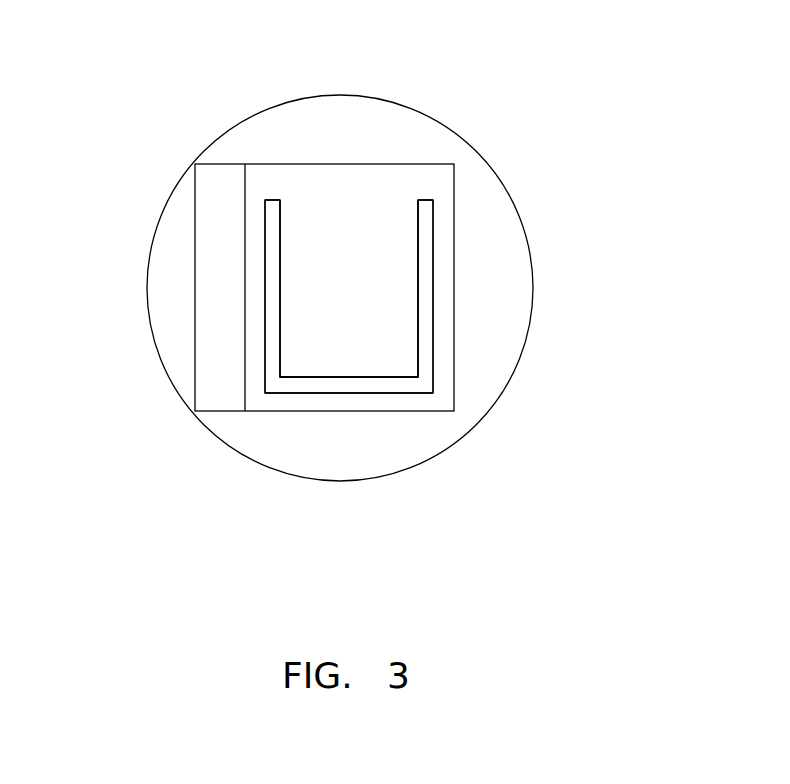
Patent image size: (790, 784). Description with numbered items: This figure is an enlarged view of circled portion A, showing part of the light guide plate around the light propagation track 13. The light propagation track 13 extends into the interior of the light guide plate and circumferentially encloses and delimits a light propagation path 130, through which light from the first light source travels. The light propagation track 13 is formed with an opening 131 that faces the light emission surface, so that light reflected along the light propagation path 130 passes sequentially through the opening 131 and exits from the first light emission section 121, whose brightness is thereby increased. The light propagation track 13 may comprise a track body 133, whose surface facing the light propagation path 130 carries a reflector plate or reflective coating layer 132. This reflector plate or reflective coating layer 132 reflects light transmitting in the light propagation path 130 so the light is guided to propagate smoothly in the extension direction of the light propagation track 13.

The circled portion A is at (317, 95).
The first light emission section 121 is at (287, 163).
The light propagation track 13 is at (550, 552).
The light propagation path 130 is at (375, 283).
The opening 131 is at (350, 203).
The reflector plate or reflective coating layer 132 is at (323, 377).
The track body 133 is at (427, 367).